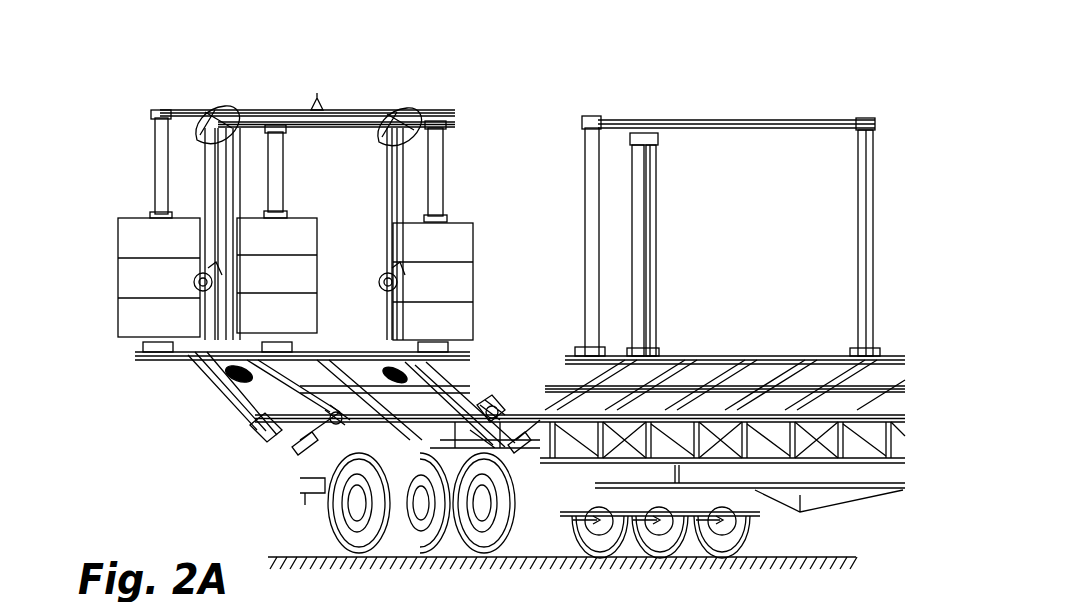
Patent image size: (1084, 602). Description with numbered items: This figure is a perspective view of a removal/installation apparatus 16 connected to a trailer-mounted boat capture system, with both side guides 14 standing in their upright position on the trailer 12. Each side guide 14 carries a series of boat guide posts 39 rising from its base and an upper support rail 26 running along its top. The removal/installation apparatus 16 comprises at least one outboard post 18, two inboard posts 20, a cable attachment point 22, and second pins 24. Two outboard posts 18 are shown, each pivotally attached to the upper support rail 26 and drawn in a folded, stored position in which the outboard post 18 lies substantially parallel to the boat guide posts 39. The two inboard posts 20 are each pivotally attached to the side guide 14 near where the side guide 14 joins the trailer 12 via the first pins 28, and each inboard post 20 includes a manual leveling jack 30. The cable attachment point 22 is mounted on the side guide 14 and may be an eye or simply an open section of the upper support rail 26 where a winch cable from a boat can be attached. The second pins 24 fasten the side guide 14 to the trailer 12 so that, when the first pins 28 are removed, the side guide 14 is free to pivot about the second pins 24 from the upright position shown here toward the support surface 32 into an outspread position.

The trailer 12 is at (303, 505).
The side guide 14 is at (527, 197).
The removal/installation apparatus 16 is at (498, 433).
The outboard post 18 is at (275, 203).
The inboard post 20 is at (255, 402).
The cable attachment point 22 is at (317, 98).
The second pins 24 is at (300, 468).
The upper support rail 26 is at (352, 110).
The first pins 28 is at (340, 412).
The manual leveling jack 30 is at (228, 383).
The support surface 32 is at (841, 557).
The boat guide posts 39 is at (388, 193).